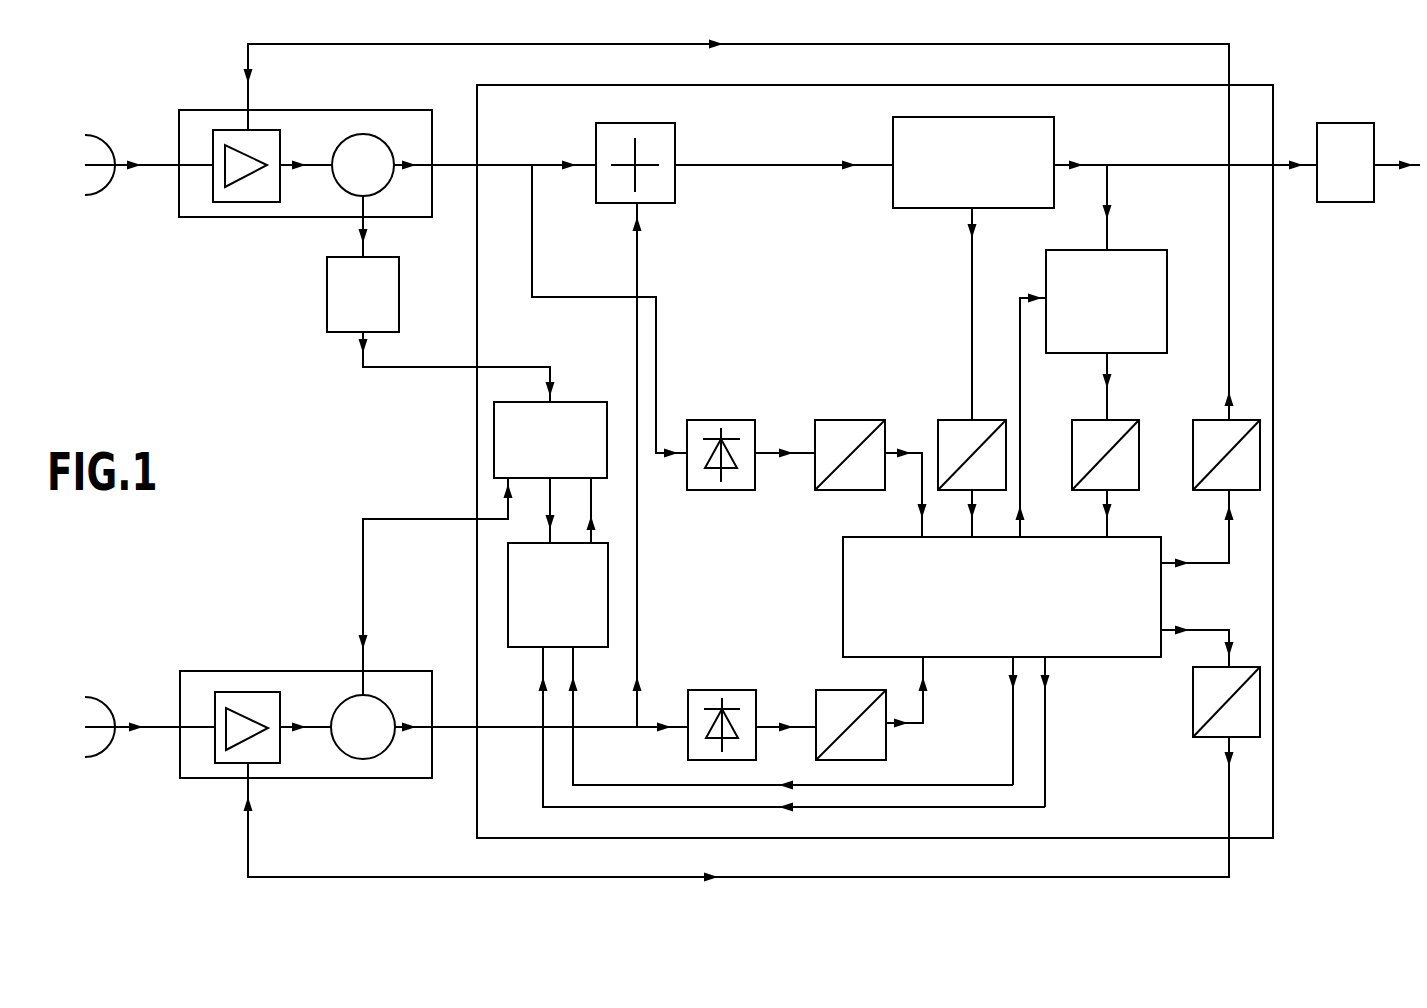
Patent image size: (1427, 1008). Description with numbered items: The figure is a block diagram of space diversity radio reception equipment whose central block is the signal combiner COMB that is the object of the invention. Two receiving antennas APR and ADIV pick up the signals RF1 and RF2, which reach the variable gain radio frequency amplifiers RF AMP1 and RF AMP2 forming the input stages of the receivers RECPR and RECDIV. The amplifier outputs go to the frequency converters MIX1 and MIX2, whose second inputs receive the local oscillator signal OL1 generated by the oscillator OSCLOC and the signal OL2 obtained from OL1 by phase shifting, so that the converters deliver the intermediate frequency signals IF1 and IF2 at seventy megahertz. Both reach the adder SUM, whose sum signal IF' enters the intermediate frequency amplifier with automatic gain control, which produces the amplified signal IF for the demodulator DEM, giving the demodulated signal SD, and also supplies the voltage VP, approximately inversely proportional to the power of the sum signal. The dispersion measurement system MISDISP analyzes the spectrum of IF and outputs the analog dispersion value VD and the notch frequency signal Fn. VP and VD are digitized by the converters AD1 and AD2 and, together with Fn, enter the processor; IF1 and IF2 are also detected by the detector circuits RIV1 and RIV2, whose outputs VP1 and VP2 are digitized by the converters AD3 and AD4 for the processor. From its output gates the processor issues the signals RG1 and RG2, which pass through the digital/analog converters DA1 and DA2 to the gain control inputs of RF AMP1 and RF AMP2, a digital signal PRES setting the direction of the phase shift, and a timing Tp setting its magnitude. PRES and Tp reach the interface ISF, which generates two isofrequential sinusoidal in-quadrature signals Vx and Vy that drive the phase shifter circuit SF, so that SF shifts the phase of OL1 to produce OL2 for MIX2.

The receiving antenna APR is at (105, 208).
The received radio frequency signal RF1 is at (132, 148).
The receiver RECPR is at (193, 122).
The variable gain radio frequency amplifier RF AMP1 is at (253, 185).
The frequency converter MIX1 is at (365, 150).
The intermediate frequency signal IF1 is at (495, 148).
The local oscillator signal OL1 is at (457, 299).
The oscillator OSCLOC is at (333, 318).
The adder SUM is at (598, 144).
The sum signal IF' is at (784, 148).
The intermediate frequency signal IF2 is at (541, 467).
The amplified intermediate frequency signal IF is at (1185, 147).
The amplification control voltage signal VP is at (991, 314).
The demodulator DEM is at (1340, 140).
The demodulated signal SD is at (1397, 147).
The dispersion measurement system MISDISP is at (1140, 310).
The notch frequency signal Fn is at (1026, 398).
The dispersion value signal VD is at (1126, 386).
The signal combiner COMB is at (1256, 343).
The phase shifter circuit SF is at (580, 423).
The phase-shifted local oscillator signal OL2 is at (436, 586).
The in-quadrature sinusoidal signal Vy is at (563, 510).
The in-quadrature sinusoidal signal Vx is at (605, 510).
The interface toward the phase shifter circuit ISF is at (540, 610).
The detector circuit RIV1 is at (698, 428).
The detector output signal VP1 is at (785, 436).
The analog/digital converter AD3 is at (840, 492).
The analog/digital converter AD1 is at (963, 425).
The analog/digital converter AD2 is at (1100, 425).
The digital/analog converter DA1 is at (1210, 428).
The gain control signal RG1 is at (1192, 540).
The gain control signal RG2 is at (1197, 629).
The detector circuit RIV2 is at (700, 700).
The detector output signal VP2 is at (786, 707).
The analog/digital converter AD4 is at (877, 737).
The timing signal Tp is at (996, 721).
The phase shift direction control signal PRES is at (1077, 732).
The digital/analog converter DA2 is at (1222, 728).
The receiving antenna ADIV is at (100, 712).
The received radio frequency signal RF2 is at (132, 710).
The receiver RECDIV is at (202, 745).
The variable gain radio frequency amplifier RF AMP2 is at (248, 700).
The frequency converter MIX2 is at (367, 735).